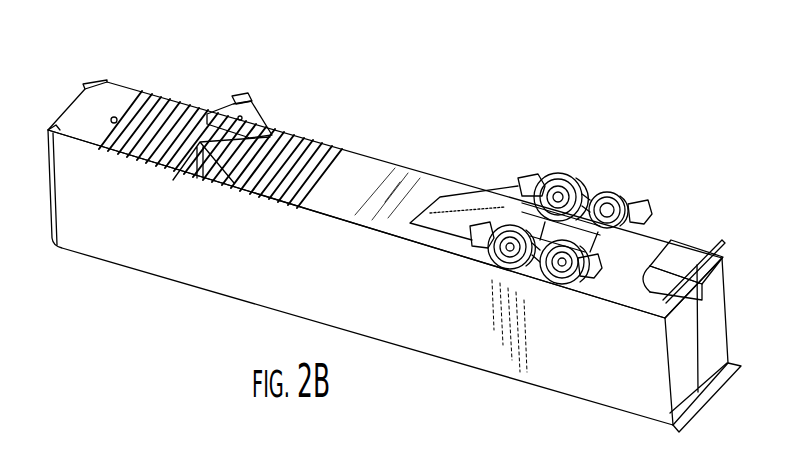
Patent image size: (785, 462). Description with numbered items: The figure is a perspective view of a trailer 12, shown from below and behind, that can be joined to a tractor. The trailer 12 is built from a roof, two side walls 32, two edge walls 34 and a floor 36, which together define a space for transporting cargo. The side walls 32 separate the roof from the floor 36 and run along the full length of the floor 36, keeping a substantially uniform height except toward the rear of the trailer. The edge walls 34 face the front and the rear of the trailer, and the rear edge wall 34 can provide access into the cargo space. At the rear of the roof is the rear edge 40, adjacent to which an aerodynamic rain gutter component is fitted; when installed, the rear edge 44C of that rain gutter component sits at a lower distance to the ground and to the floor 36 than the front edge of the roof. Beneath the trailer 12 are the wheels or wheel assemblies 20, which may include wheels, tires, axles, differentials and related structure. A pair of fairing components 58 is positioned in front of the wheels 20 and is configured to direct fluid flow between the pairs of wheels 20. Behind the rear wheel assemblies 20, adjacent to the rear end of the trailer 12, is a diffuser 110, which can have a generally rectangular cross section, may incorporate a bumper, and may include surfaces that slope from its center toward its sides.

The trailer 12 is at (410, 148).
The wheel assemblies 20 is at (573, 177).
The side walls 32 is at (480, 345).
The edge walls 34 is at (72, 115).
The floor 36 is at (353, 173).
The rear edge 40 is at (733, 362).
The rear edge of rain gutter component 44C is at (717, 388).
The components 58 is at (530, 172).
The diffuser 110 is at (677, 253).